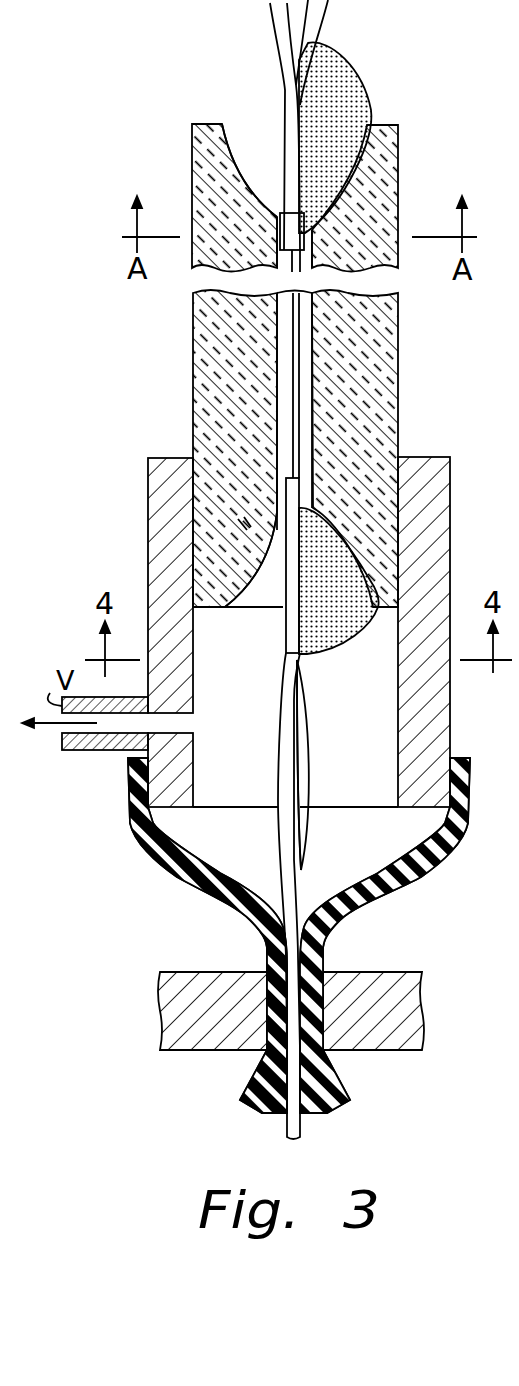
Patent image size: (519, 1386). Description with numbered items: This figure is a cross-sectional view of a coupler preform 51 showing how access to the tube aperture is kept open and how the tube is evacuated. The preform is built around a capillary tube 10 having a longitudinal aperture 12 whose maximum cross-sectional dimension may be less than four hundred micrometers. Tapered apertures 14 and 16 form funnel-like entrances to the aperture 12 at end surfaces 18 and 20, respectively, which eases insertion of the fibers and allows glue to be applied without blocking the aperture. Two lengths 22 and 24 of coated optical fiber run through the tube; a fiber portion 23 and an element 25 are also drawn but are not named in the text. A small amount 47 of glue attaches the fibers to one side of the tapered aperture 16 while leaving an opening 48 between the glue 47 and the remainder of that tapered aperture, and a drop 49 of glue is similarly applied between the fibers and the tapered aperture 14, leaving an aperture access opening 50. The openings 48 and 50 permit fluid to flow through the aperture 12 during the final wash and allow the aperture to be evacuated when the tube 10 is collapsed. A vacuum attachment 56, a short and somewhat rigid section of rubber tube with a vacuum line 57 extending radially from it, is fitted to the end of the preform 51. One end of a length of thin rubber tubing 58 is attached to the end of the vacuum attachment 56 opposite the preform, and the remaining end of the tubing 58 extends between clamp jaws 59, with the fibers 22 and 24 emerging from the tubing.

The tube 10 is at (192, 146).
The longitudinal aperture 12 is at (283, 406).
The tapered aperture 14 is at (227, 153).
The tapered aperture 16 is at (243, 550).
The end surface 18 is at (203, 124).
The end surface 20 is at (212, 608).
The coated optical fiber 22 is at (307, 363).
The fiber portion in chamber 23 is at (283, 743).
The coated optical fiber 24 is at (318, 740).
The elongated element (lens) 25 is at (305, 772).
The glue 47 is at (348, 632).
The opening 48 is at (276, 519).
The drop of glue 49 is at (338, 80).
The aperture access opening 50 is at (274, 210).
The coupler preform 51 is at (185, 347).
The vacuum attachment 56 is at (148, 483).
The vacuum line 57 is at (92, 750).
The thin rubber tubing 58 is at (403, 885).
The clamp jaws 59 is at (175, 1012).